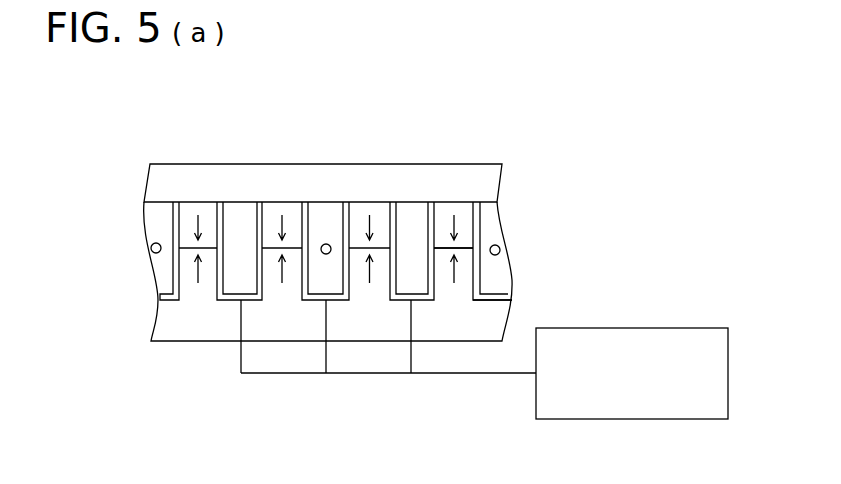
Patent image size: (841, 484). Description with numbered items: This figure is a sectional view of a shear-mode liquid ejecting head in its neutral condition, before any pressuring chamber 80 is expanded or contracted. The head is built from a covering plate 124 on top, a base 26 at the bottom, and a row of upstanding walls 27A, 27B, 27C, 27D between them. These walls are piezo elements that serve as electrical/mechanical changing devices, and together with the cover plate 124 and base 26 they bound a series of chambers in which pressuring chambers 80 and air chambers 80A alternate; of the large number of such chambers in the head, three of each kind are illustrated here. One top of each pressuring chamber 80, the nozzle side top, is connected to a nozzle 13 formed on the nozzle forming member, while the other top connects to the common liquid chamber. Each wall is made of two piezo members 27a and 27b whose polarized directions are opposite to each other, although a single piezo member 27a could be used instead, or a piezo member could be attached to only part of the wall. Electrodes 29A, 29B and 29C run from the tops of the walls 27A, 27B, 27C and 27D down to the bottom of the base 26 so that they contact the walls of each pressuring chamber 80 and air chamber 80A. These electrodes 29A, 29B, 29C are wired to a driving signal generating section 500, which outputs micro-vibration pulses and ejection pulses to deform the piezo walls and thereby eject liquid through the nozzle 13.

The covering plate 124 is at (175, 164).
The base 26 is at (160, 337).
The wall 27A is at (197, 210).
The wall 27B is at (282, 210).
The wall 27C is at (370, 208).
The wall 27D is at (453, 208).
The piezo member 27a is at (469, 223).
The piezo member 27b is at (469, 268).
The electrode 29A is at (224, 210).
The electrode 29B is at (310, 220).
The electrode 29C is at (398, 212).
The pressuring chamber 80 is at (332, 298).
The air chamber 80A is at (230, 300).
The nozzle 13 is at (326, 255).
The driving signal generating section 500 is at (635, 327).